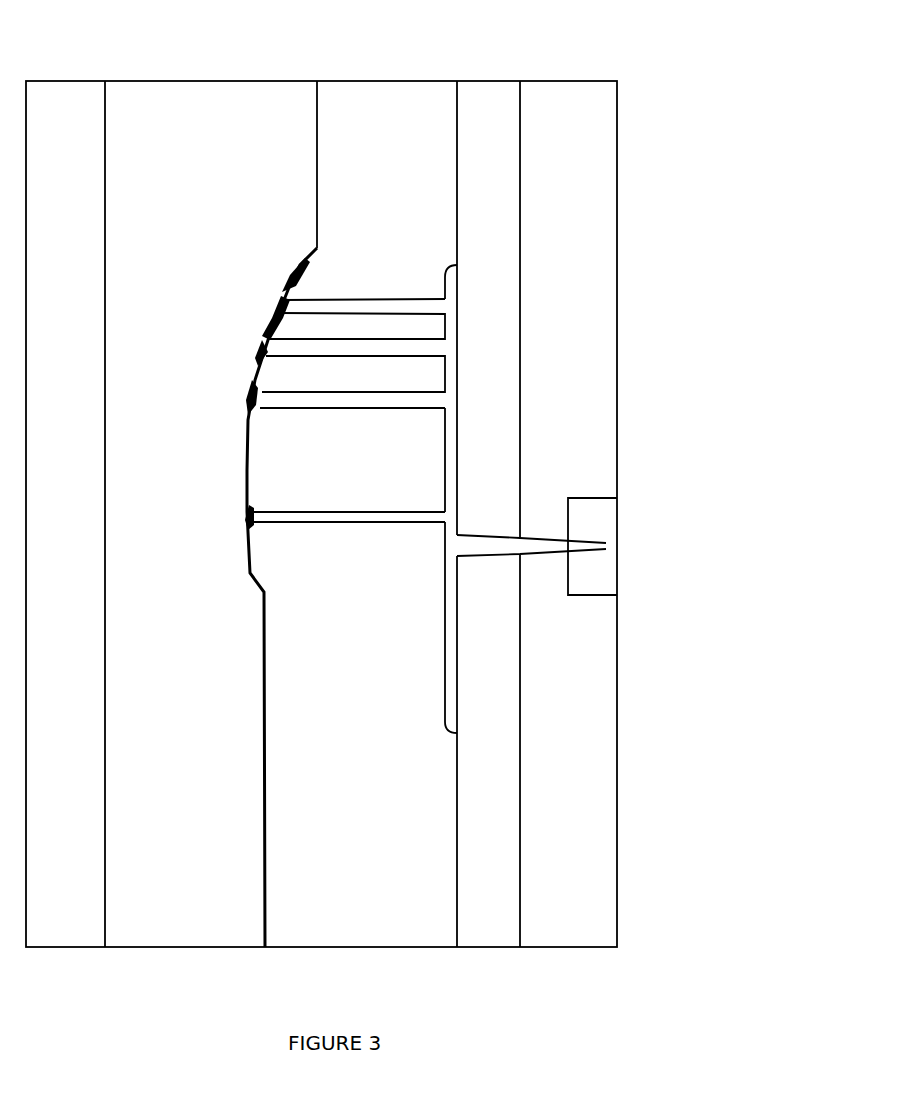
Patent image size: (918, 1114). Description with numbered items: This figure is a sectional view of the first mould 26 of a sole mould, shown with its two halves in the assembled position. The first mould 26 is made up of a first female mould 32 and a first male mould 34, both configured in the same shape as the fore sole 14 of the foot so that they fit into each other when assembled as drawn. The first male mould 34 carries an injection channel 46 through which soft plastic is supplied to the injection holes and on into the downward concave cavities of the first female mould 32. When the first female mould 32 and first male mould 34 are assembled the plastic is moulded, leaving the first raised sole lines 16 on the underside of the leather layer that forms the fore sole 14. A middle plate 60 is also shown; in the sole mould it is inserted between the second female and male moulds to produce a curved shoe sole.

The first mould 26 is at (706, 212).
The first female mould 32 is at (233, 120).
The first male mould 34 is at (408, 100).
The middle plate 60 is at (575, 100).
The injection channel 46 is at (381, 338).
The first raised sole lines 16 is at (263, 340).
The fore sole 14 is at (218, 597).